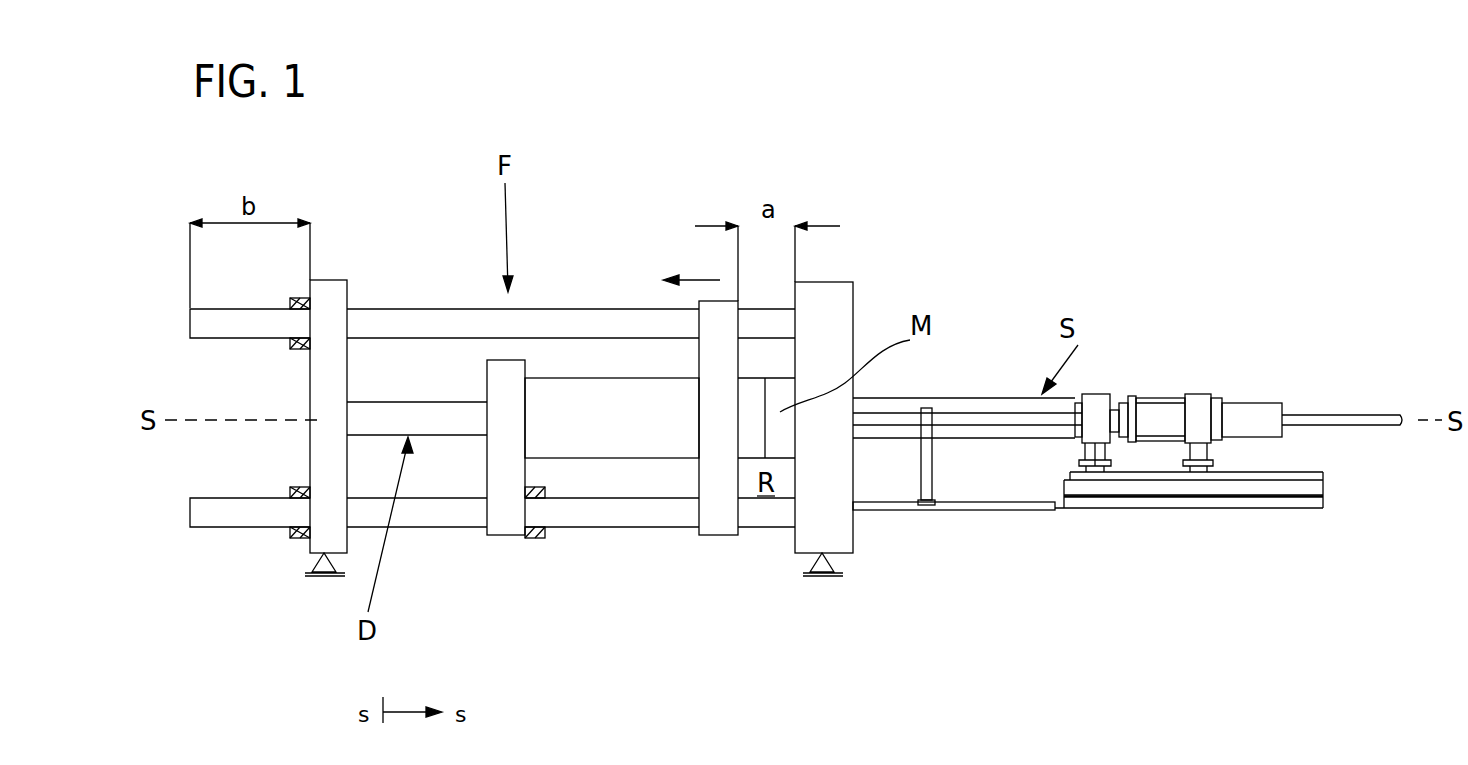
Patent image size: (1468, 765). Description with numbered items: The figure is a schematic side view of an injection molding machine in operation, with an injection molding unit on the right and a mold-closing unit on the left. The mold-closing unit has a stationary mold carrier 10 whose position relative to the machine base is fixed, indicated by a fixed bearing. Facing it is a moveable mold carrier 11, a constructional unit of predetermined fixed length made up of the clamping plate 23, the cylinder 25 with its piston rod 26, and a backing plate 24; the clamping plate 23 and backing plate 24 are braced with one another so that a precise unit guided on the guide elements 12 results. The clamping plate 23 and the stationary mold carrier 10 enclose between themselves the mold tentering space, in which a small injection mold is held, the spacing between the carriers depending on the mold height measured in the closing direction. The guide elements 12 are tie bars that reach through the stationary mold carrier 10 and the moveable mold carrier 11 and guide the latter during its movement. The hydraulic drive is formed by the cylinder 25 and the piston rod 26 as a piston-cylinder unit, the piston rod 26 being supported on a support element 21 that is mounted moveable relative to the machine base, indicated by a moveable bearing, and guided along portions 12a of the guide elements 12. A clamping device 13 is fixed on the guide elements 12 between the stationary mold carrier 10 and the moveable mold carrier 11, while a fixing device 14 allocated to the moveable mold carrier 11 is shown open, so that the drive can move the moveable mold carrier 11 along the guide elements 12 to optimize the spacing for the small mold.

The stationary mold carrier 10 is at (830, 307).
The moveable mold carrier 11 is at (641, 378).
The guide elements 12 is at (575, 308).
The portion of the guide element 12a is at (242, 320).
The clamping device 13 is at (300, 298).
The fixing device 14 is at (533, 540).
The support element 21 is at (322, 452).
The clamping plate 23 is at (715, 515).
The backing plate 24 is at (505, 515).
The cylinder 25 is at (622, 434).
The piston rod 26 is at (407, 425).